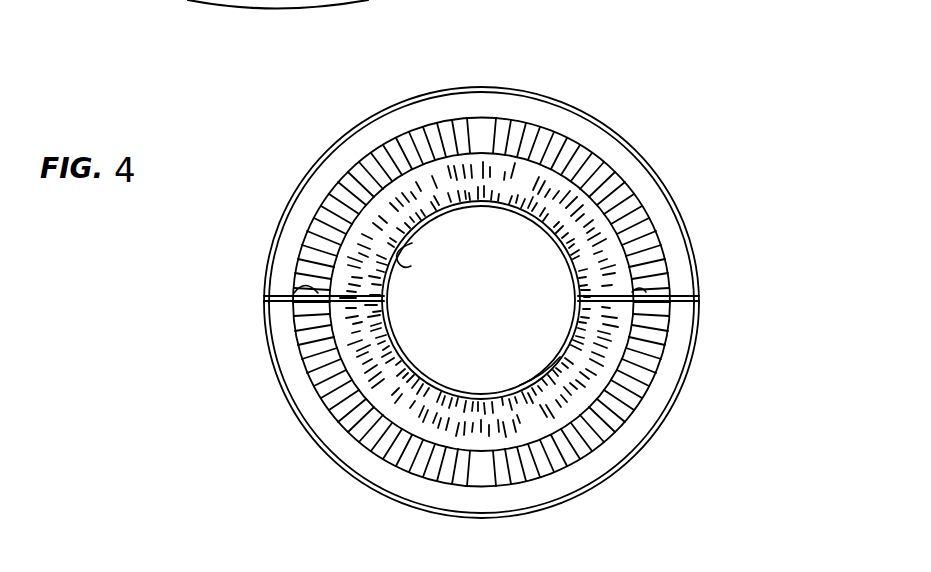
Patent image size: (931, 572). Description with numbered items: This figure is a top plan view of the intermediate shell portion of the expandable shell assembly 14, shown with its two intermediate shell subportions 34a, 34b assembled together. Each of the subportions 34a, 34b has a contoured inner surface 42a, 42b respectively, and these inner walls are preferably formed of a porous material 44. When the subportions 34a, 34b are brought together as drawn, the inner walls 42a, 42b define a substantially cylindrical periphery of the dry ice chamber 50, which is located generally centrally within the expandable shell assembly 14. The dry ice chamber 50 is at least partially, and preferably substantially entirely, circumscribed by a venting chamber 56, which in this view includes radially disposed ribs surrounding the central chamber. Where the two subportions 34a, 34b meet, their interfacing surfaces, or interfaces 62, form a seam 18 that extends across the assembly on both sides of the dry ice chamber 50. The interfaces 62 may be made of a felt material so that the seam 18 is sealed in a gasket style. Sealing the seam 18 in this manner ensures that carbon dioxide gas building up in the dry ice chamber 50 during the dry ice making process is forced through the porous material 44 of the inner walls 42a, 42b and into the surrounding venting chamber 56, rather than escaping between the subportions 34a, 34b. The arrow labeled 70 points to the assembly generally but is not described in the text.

The expandable shell assembly 14 is at (690, 209).
The seam 18 is at (262, 294).
The intermediate shell subportion 34a is at (607, 118).
The intermediate shell subportion 34b is at (672, 409).
The contoured inner surface 42a is at (447, 206).
The contoured inner surface 42b is at (546, 362).
The porous material 44 is at (380, 258).
The dry ice chamber 50 is at (492, 304).
The venting chamber 56 is at (485, 167).
The interfaces 62 is at (283, 303).
The sensor 70 is at (315, 115).